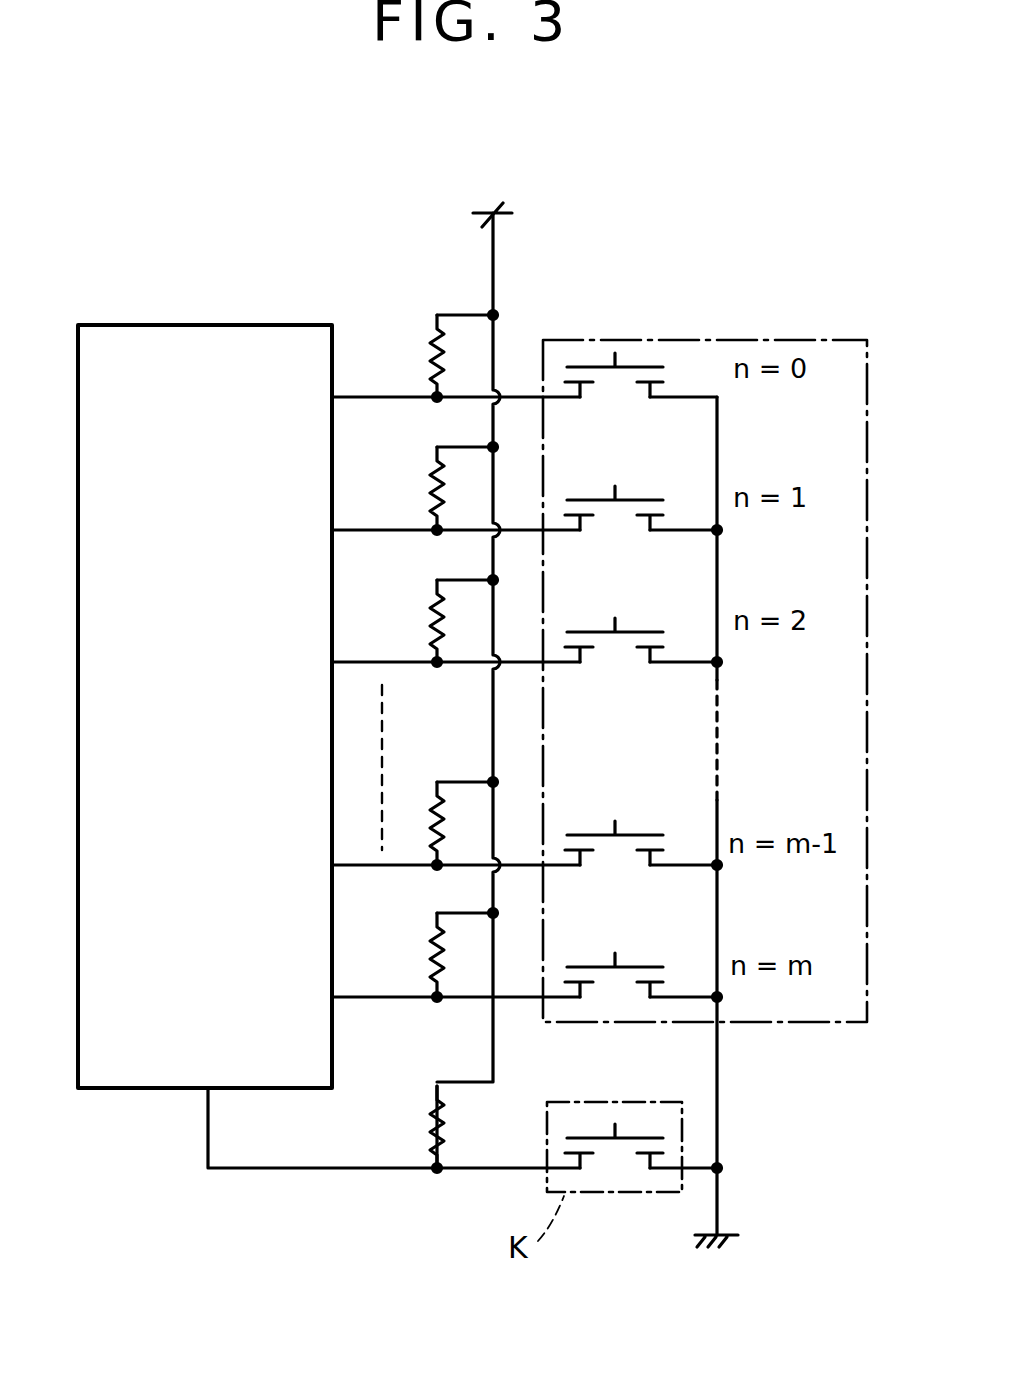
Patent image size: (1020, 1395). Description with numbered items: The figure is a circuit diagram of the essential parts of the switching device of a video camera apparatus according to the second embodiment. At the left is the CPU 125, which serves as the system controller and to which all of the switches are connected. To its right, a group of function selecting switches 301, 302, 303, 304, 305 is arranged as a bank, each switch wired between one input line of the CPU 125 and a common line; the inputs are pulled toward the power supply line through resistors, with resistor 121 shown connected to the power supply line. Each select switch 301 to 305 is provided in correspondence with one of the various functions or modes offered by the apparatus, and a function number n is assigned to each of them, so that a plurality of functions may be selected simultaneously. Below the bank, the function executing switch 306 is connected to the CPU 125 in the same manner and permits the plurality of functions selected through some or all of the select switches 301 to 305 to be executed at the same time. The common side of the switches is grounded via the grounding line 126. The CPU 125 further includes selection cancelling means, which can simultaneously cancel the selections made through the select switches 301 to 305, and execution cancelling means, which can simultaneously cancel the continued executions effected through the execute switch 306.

The resistor 121 is at (510, 207).
The CPU 125 is at (207, 323).
The grounding line 126 is at (695, 1240).
The function selecting switch 301 is at (630, 360).
The function selecting switch 302 is at (632, 496).
The function selecting switch 303 is at (632, 628).
The function selecting switch 304 is at (627, 828).
The function selecting switch 305 is at (630, 960).
The function executing switch 306 is at (630, 1126).